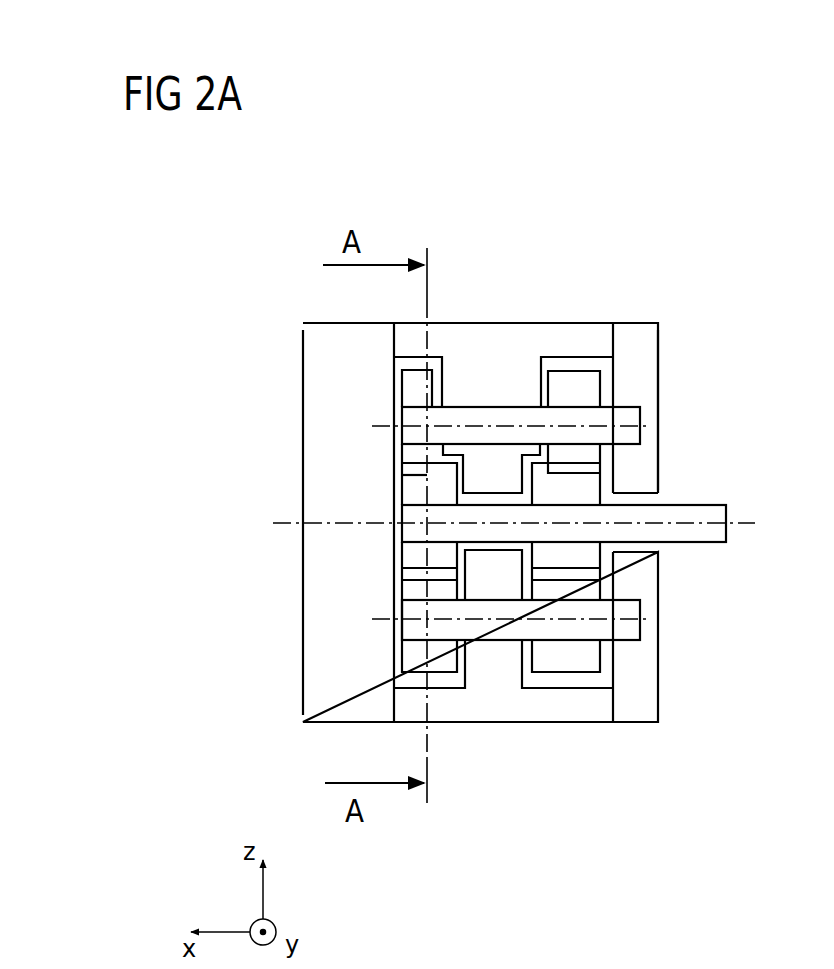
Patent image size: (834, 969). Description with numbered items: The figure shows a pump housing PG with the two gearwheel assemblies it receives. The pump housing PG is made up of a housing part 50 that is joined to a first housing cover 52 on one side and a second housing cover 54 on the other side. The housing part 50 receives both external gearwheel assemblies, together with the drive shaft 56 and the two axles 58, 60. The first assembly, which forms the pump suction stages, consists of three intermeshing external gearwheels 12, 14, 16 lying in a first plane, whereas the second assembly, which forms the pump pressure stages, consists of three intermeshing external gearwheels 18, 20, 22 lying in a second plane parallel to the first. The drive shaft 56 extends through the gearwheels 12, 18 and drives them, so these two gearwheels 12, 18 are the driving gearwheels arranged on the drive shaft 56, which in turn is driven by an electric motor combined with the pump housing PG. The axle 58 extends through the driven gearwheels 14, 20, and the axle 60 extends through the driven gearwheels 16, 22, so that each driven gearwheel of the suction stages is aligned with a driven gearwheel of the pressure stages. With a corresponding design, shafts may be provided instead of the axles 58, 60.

The pump housing PG is at (637, 253).
The housing part 50 is at (515, 345).
The first housing cover 52 is at (323, 348).
The second housing cover 54 is at (643, 350).
The external gearwheel 12 is at (415, 487).
The external gearwheel 14 is at (415, 390).
The external gearwheel 16 is at (415, 655).
The external gearwheel 18 is at (577, 488).
The external gearwheel 20 is at (577, 388).
The external gearwheel 22 is at (577, 588).
The drive shaft 56 is at (703, 513).
The axle 58 is at (472, 415).
The axle 60 is at (493, 627).